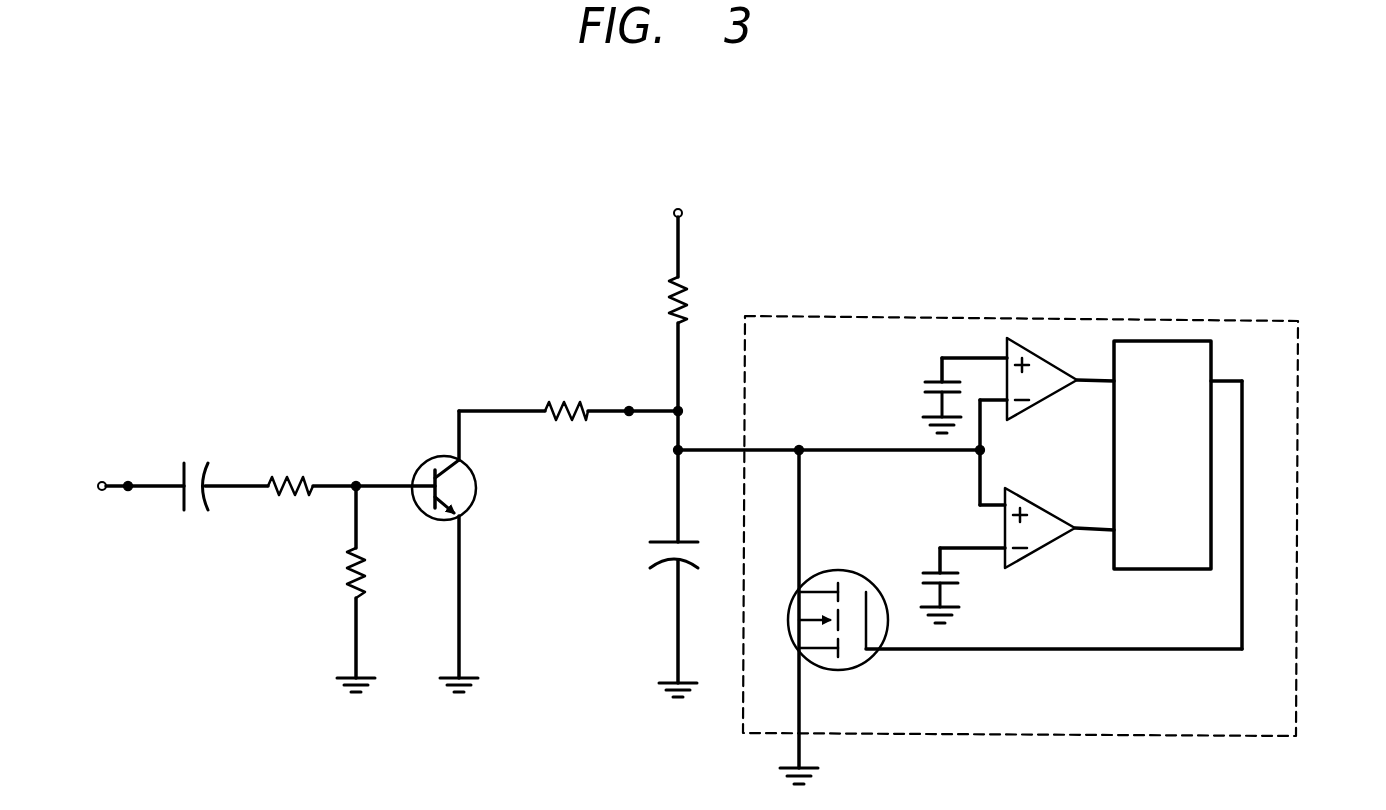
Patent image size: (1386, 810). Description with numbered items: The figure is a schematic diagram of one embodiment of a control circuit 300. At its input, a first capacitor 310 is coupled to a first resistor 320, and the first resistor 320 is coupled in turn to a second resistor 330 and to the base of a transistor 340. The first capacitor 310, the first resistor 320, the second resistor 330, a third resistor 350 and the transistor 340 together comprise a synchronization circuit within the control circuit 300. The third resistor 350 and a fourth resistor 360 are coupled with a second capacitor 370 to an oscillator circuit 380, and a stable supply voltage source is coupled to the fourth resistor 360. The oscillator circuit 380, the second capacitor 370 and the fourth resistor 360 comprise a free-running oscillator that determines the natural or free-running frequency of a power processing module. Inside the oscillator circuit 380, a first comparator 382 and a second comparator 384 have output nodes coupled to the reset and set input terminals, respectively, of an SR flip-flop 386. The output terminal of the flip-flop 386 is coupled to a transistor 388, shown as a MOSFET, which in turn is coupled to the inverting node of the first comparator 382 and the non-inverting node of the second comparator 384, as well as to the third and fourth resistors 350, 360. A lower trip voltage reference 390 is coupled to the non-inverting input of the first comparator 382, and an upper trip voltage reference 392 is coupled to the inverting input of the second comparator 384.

The control circuit 300 is at (1233, 218).
The first capacitor 310 is at (184, 463).
The first resistor 320 is at (300, 477).
The second resistor 330 is at (345, 578).
The transistor 340 is at (427, 462).
The third resistor 350 is at (562, 400).
The fourth resistor 360 is at (672, 290).
The second capacitor 370 is at (647, 552).
The oscillator circuit 380 is at (1300, 707).
The first comparator 382 is at (1040, 400).
The second comparator 384 is at (1040, 550).
The SR flip-flop 386 is at (1160, 571).
The transistor 388 is at (857, 668).
The lower trip voltage reference 390 is at (925, 382).
The upper trip voltage reference 392 is at (925, 573).